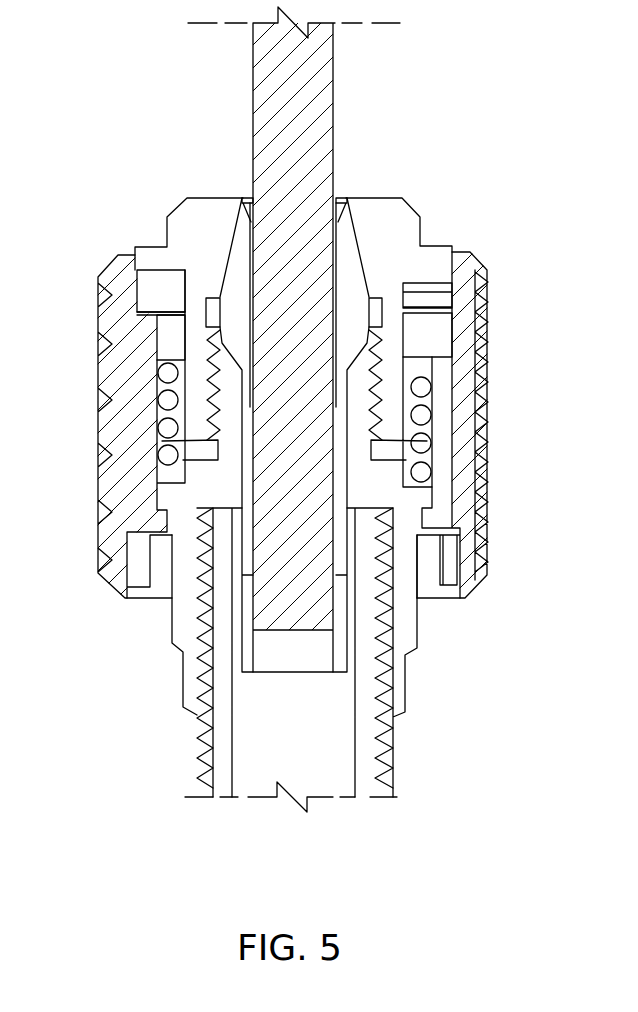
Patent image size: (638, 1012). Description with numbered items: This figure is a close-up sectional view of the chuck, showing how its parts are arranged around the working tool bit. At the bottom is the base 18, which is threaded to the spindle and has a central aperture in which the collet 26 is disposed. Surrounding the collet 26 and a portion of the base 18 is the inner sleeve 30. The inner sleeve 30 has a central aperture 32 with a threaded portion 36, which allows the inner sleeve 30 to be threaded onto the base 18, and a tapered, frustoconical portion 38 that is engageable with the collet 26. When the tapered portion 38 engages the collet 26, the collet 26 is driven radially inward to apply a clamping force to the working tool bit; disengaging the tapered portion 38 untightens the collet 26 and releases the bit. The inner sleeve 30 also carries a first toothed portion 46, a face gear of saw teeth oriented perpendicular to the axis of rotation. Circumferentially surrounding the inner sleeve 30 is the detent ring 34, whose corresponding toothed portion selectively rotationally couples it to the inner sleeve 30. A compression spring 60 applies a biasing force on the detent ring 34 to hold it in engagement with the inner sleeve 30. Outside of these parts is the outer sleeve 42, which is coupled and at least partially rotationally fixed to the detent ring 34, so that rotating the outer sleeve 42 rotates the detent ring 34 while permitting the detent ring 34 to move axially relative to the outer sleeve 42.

The base 18 is at (417, 621).
The collet 26 is at (352, 288).
The inner sleeve 30 is at (428, 252).
The central aperture 32 is at (246, 188).
The detent ring 34 is at (440, 331).
The threaded portion 36 is at (213, 395).
The tapered portion 38 is at (352, 227).
The outer sleeve 42 is at (455, 461).
The first toothed portion 46 is at (440, 293).
The compression spring 60 is at (432, 395).